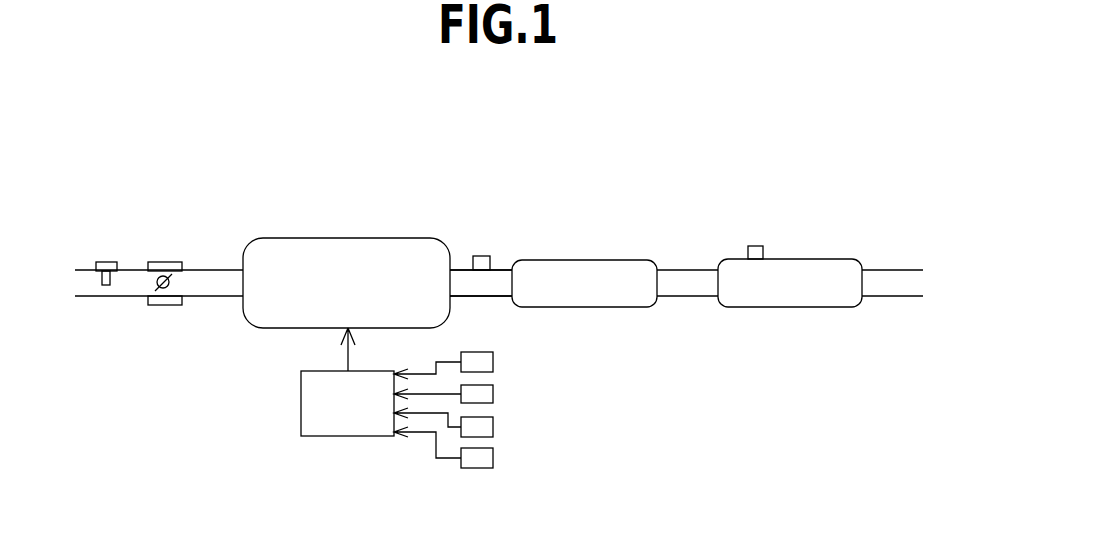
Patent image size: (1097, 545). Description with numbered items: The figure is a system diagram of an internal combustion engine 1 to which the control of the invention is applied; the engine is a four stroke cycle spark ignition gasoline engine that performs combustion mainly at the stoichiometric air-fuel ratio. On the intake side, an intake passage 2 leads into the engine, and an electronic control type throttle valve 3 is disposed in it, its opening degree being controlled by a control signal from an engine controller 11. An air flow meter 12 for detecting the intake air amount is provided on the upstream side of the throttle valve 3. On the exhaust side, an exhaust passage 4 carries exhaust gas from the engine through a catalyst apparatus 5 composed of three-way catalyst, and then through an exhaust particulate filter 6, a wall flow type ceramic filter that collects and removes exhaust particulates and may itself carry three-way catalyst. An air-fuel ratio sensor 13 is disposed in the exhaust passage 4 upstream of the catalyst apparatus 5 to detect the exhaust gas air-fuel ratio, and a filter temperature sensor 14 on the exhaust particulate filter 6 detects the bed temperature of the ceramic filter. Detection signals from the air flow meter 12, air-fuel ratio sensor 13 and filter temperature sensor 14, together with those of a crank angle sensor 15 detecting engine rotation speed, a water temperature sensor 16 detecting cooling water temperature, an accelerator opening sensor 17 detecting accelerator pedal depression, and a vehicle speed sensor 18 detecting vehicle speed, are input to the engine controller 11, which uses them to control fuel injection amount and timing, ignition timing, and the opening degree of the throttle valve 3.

The internal combustion engine 1 is at (300, 236).
The intake passage 2 is at (212, 278).
The throttle valve 3 is at (158, 262).
The exhaust passage 4 is at (483, 288).
The catalyst apparatus 5 is at (599, 277).
The exhaust particulate filter 6 is at (817, 271).
The engine controller 11 is at (352, 428).
The air flow meter 12 is at (100, 261).
The air-fuel ratio sensor 13 is at (478, 255).
The filter temperature sensor 14 is at (753, 245).
The crank angle sensor 15 is at (493, 362).
The water temperature sensor 16 is at (493, 394).
The accelerator opening sensor 17 is at (493, 427).
The vehicle speed sensor 18 is at (493, 458).